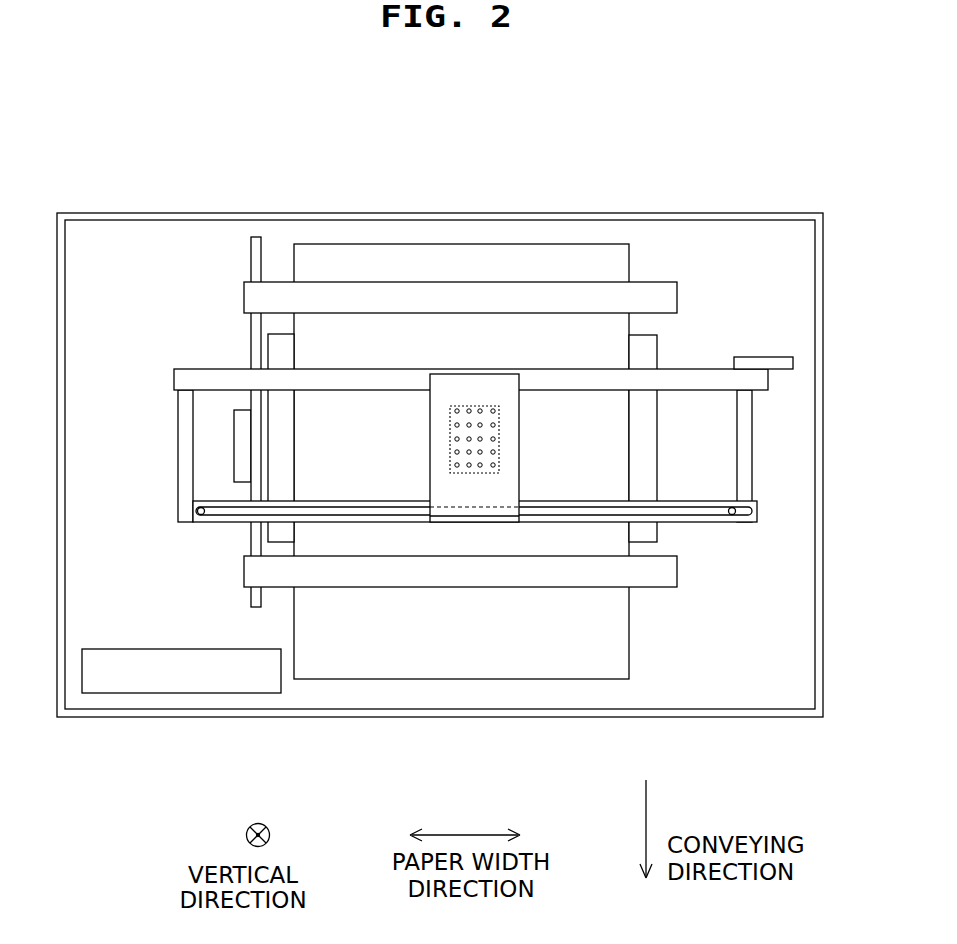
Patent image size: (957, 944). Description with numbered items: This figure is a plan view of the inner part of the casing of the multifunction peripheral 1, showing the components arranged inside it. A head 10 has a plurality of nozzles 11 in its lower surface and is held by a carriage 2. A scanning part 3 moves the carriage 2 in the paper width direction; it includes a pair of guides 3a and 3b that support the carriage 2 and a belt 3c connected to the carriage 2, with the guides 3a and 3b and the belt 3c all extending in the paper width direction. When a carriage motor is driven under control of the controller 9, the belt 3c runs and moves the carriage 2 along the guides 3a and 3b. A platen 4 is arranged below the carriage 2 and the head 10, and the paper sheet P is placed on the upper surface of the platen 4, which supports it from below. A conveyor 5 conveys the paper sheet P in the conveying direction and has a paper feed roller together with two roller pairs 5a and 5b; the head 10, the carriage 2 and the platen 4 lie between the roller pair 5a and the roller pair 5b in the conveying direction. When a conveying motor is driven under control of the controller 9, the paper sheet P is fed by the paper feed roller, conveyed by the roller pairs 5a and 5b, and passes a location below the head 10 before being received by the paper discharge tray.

The multifunction peripheral 1 is at (745, 191).
The carriage 2 is at (480, 421).
The scanning part 3 is at (519, 434).
The guide 3a is at (768, 383).
The guide 3b is at (752, 511).
The belt 3c is at (713, 522).
The platen 4 is at (653, 355).
The conveyor 5 is at (496, 416).
The roller pair 5a is at (253, 298).
The roller pair 5b is at (248, 570).
The controller 9 is at (122, 648).
The head 10 is at (450, 440).
The nozzles 11 is at (499, 430).
The paper sheet P is at (470, 258).